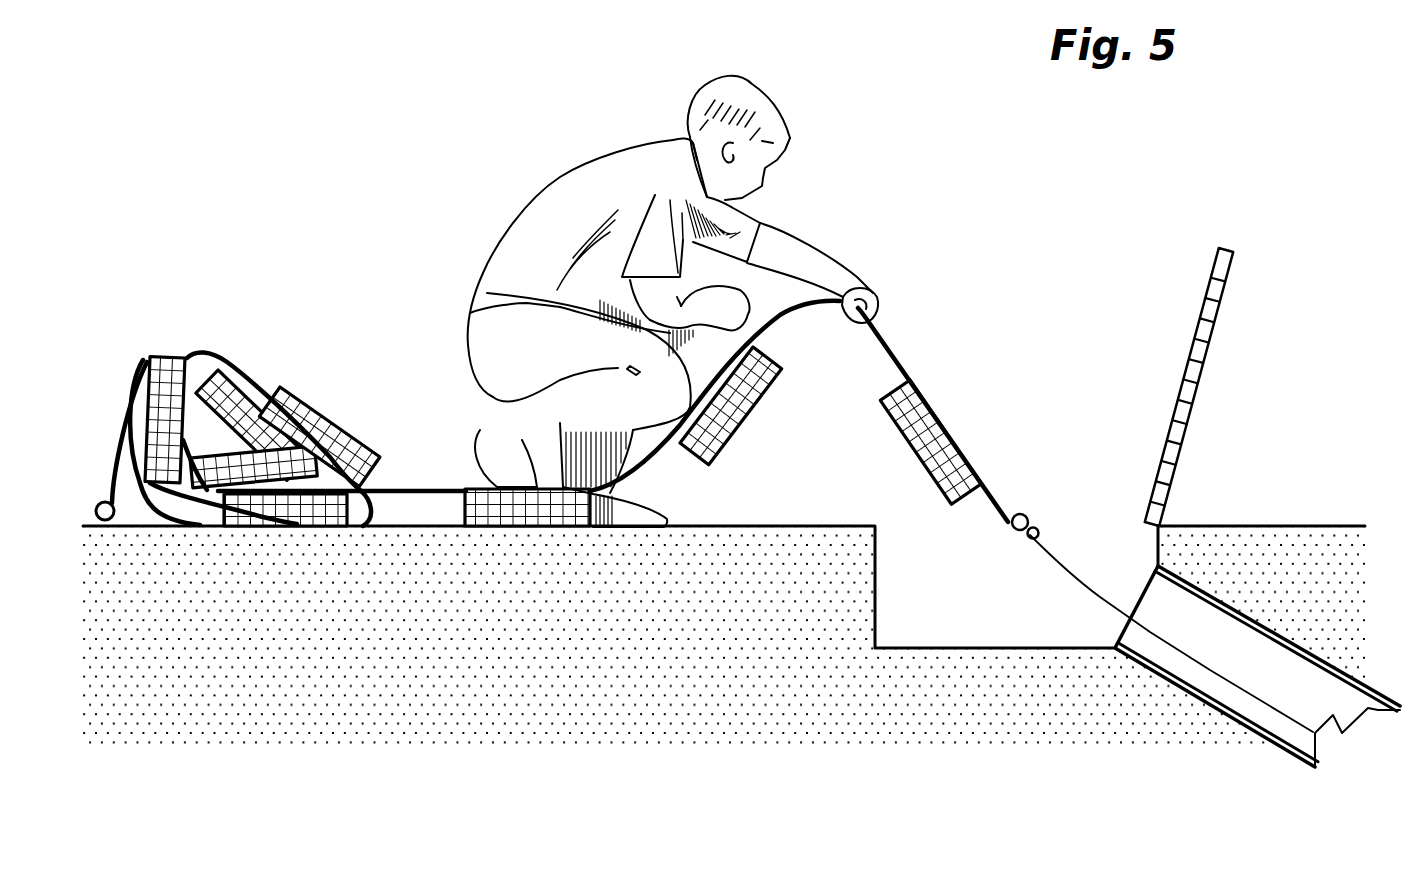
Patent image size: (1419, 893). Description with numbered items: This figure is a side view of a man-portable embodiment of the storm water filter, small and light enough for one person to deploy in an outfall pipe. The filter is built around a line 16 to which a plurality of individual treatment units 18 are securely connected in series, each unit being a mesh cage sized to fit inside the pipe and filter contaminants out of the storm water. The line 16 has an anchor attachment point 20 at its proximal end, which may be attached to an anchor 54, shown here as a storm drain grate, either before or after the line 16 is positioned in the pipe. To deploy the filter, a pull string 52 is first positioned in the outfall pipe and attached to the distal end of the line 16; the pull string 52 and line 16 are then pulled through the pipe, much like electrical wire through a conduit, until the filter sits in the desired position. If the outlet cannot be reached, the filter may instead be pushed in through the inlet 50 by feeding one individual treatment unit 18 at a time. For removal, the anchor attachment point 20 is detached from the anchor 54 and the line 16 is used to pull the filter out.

The line 16 is at (903, 350).
The individual treatment unit 18 is at (922, 455).
The anchor attachment point 20 is at (118, 520).
The inlet 50 is at (1091, 623).
The pull string 52 is at (1073, 577).
The anchor 54 is at (1208, 285).